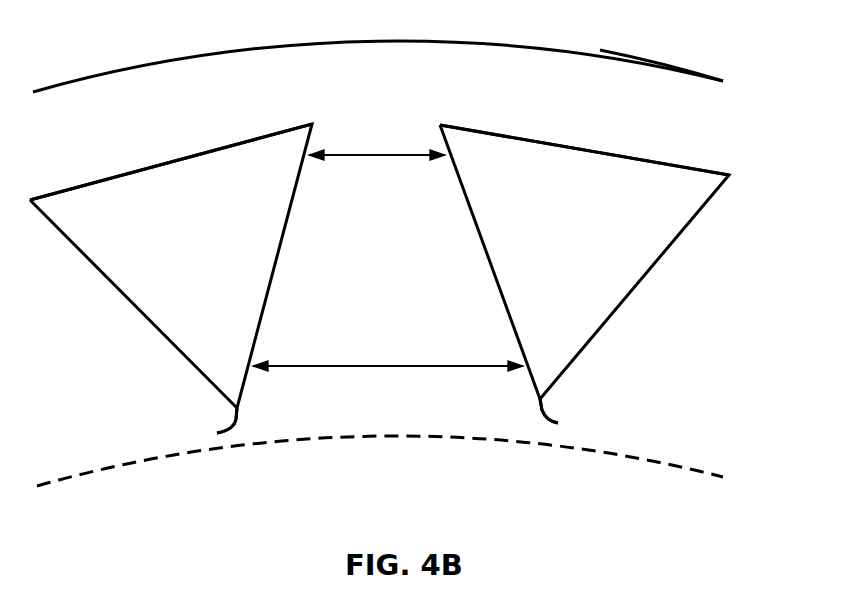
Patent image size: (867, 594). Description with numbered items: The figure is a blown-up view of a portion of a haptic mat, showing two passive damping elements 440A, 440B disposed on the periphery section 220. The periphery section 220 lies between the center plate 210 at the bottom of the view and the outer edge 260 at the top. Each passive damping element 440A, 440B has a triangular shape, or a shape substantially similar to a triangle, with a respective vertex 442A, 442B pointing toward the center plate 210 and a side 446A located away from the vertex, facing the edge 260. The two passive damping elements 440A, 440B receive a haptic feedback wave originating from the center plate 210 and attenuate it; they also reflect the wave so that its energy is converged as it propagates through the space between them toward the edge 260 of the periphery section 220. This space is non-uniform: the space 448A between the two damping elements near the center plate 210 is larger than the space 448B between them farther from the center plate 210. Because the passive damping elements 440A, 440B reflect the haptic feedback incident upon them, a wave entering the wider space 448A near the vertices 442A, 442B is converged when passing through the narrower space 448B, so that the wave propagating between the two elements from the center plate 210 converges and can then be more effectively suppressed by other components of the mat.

The periphery section 220 is at (408, 78).
The center plate 210 is at (408, 503).
The edge 260 is at (685, 69).
The passive damping element 440A is at (199, 253).
The passive damping element 440B is at (595, 253).
The side 446A is at (177, 159).
The vertex 442A is at (190, 426).
The vertex 442B is at (588, 417).
The space 448A is at (388, 384).
The space 448B is at (377, 172).